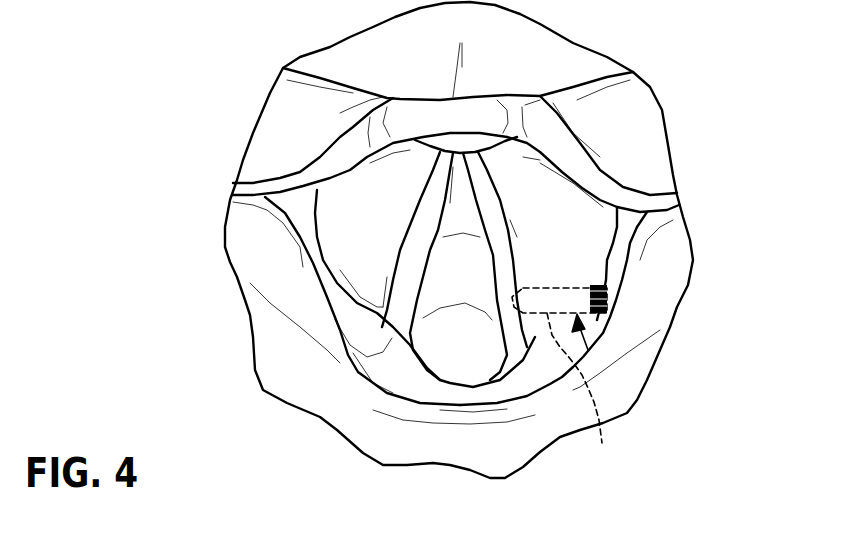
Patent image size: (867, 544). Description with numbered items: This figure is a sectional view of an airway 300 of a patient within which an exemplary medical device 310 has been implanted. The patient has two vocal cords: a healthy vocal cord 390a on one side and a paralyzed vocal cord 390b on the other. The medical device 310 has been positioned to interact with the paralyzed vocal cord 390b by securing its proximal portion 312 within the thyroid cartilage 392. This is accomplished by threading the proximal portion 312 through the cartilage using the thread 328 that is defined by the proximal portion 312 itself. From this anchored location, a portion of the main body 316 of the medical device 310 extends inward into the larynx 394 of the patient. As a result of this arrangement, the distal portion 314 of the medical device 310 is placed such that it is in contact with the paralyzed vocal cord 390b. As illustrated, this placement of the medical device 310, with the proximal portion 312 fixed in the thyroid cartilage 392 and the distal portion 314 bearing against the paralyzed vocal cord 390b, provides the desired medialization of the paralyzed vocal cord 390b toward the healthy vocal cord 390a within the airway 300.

The airway 300 is at (495, 240).
The healthy vocal cord 390a is at (305, 297).
The paralyzed vocal cord 390b is at (612, 306).
The thyroid cartilage 392 is at (668, 278).
The thread 328 is at (673, 306).
The distal portion 314 is at (559, 280).
The proximal portion 312 is at (656, 327).
The medical device 310 is at (630, 369).
The main body 316 is at (584, 394).
The larynx 394 is at (458, 334).